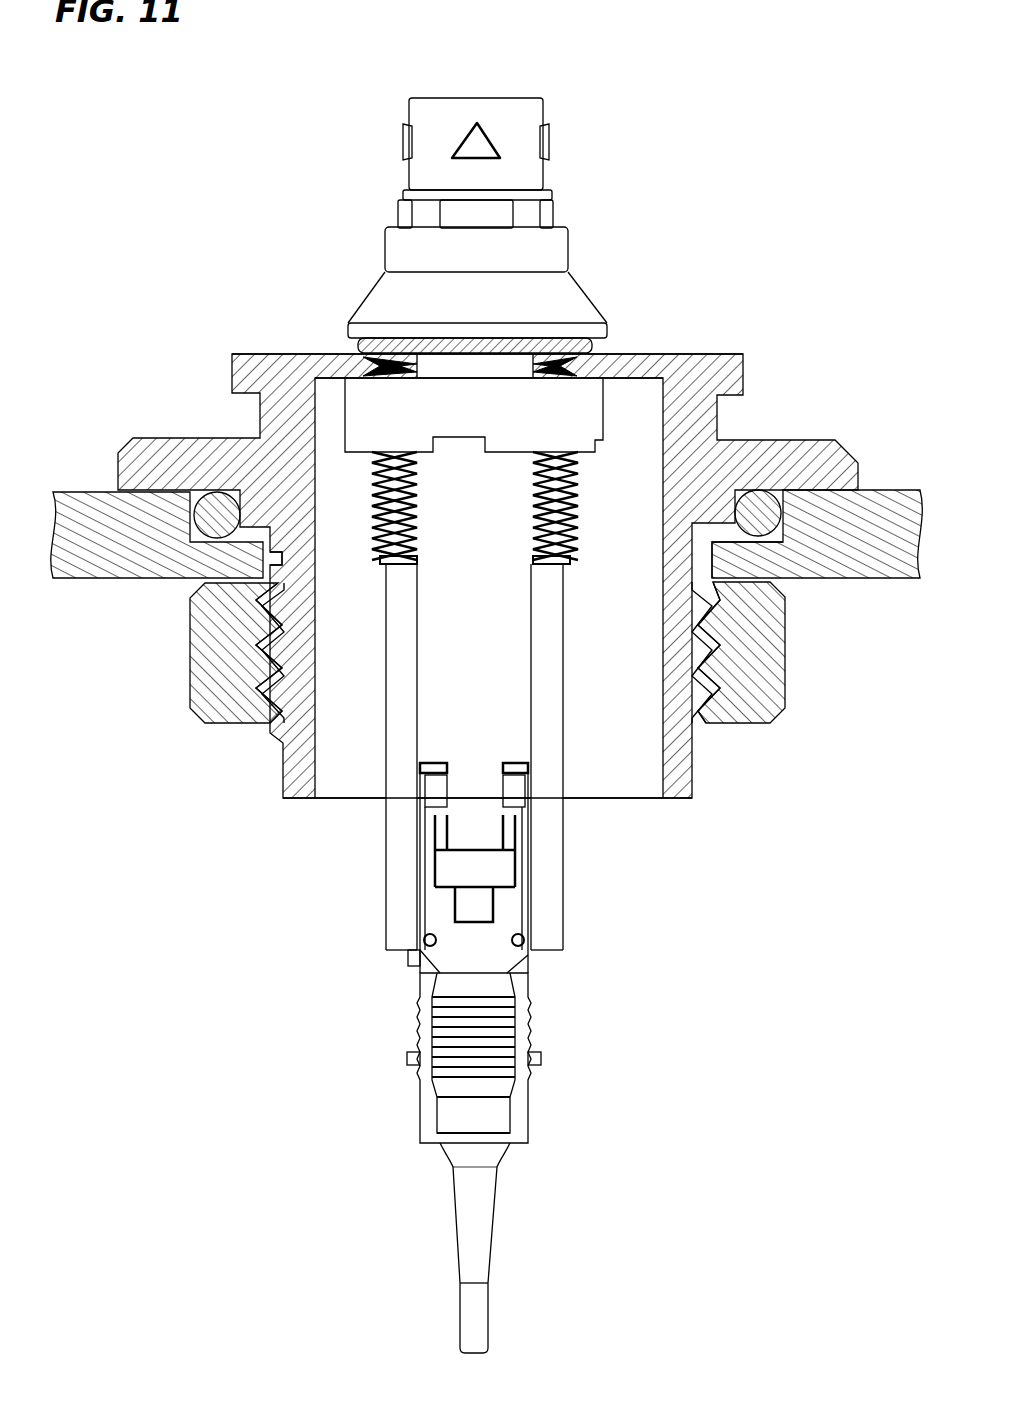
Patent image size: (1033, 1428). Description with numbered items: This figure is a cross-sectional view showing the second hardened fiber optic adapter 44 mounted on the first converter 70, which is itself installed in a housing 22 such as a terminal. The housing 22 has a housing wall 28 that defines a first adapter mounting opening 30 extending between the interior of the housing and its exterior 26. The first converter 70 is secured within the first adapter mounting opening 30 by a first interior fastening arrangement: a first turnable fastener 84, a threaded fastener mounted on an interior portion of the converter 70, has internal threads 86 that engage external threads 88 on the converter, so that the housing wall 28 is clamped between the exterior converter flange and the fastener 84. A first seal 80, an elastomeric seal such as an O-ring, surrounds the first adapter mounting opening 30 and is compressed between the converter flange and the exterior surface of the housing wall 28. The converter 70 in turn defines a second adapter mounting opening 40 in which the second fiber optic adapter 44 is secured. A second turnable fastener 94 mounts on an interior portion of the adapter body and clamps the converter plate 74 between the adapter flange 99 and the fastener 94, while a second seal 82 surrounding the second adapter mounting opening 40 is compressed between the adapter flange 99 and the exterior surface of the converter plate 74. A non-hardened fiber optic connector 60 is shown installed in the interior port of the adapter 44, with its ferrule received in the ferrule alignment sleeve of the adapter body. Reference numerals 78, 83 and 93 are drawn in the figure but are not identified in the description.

The housing 22 is at (918, 582).
The exterior 26 is at (863, 490).
The housing wall 28 is at (898, 490).
The first adapter mounting opening 30 is at (780, 583).
The second adapter mounting opening 40 is at (413, 370).
The second hardened fiber optic adapter 44 is at (567, 239).
The non-hardened fiber optic connector 60 is at (527, 1012).
The first converter 70 is at (683, 802).
The converter plate 74 is at (618, 353).
The housing thread 78 is at (693, 757).
The first seal 80 is at (215, 518).
The second seal 82 is at (420, 337).
The groove 83 is at (275, 567).
The first turnable fastener 84 is at (786, 672).
The internal threads 86 is at (270, 672).
The external threads 88 is at (706, 645).
The piston 93 is at (618, 360).
The second turnable fastener 94 is at (578, 412).
The adapter flange 99 is at (350, 326).